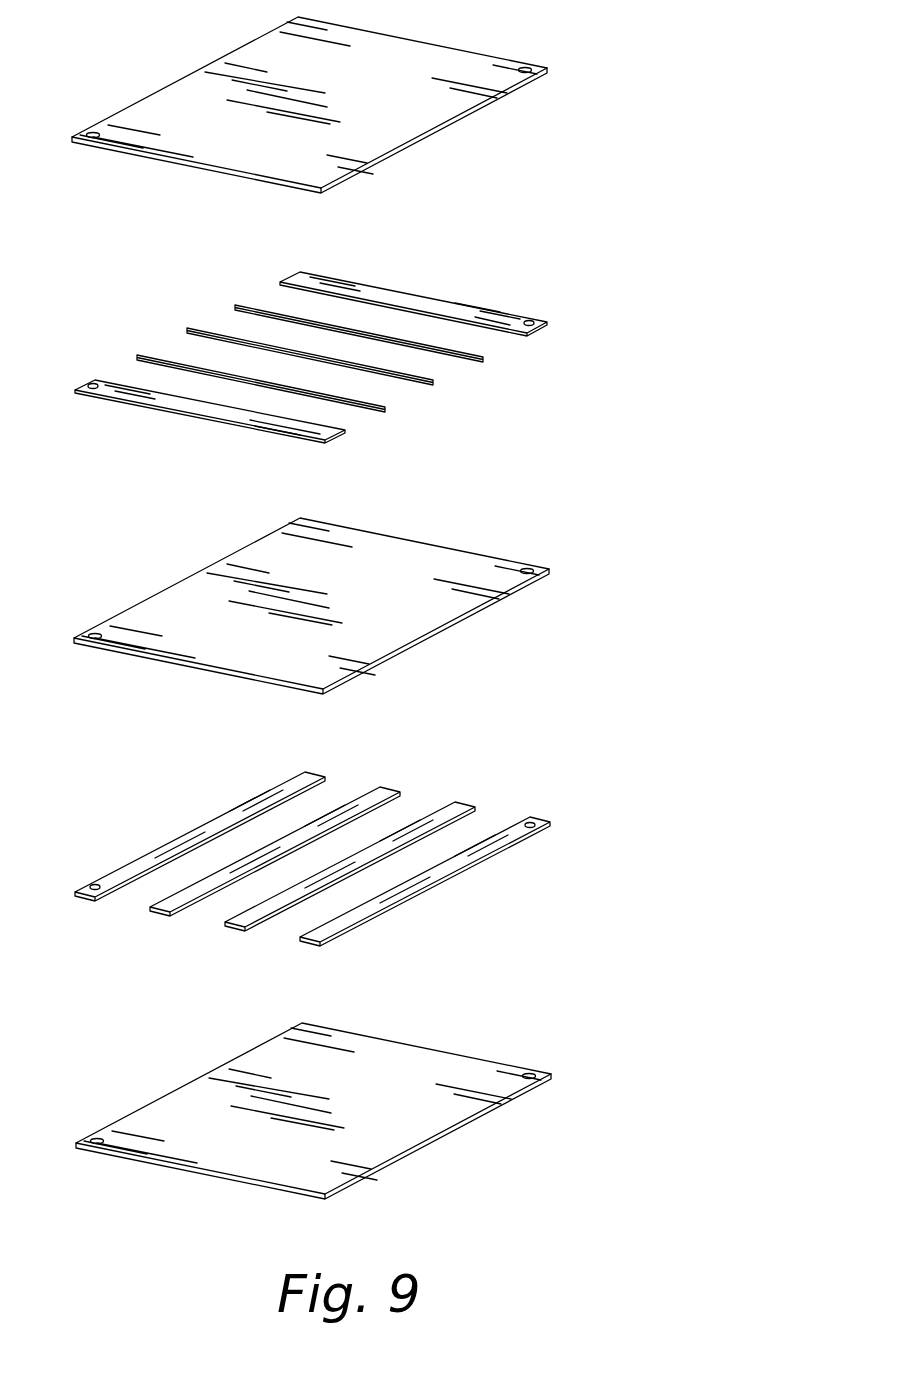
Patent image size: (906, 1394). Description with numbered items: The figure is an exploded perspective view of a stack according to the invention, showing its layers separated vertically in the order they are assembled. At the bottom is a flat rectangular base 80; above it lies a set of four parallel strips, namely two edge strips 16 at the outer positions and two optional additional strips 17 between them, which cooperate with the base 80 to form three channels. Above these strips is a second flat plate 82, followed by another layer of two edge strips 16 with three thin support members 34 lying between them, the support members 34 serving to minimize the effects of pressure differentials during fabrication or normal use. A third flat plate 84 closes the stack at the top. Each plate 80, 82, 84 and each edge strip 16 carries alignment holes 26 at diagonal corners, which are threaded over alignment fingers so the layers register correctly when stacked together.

The edge strips 16 is at (397, 298).
The additional strips 17 is at (388, 790).
The alignment holes 26 is at (91, 133).
The support members 34 is at (387, 409).
The base 80 is at (177, 1170).
The middle dielectric layer 82 is at (452, 625).
The top dielectric layer 84 is at (467, 118).